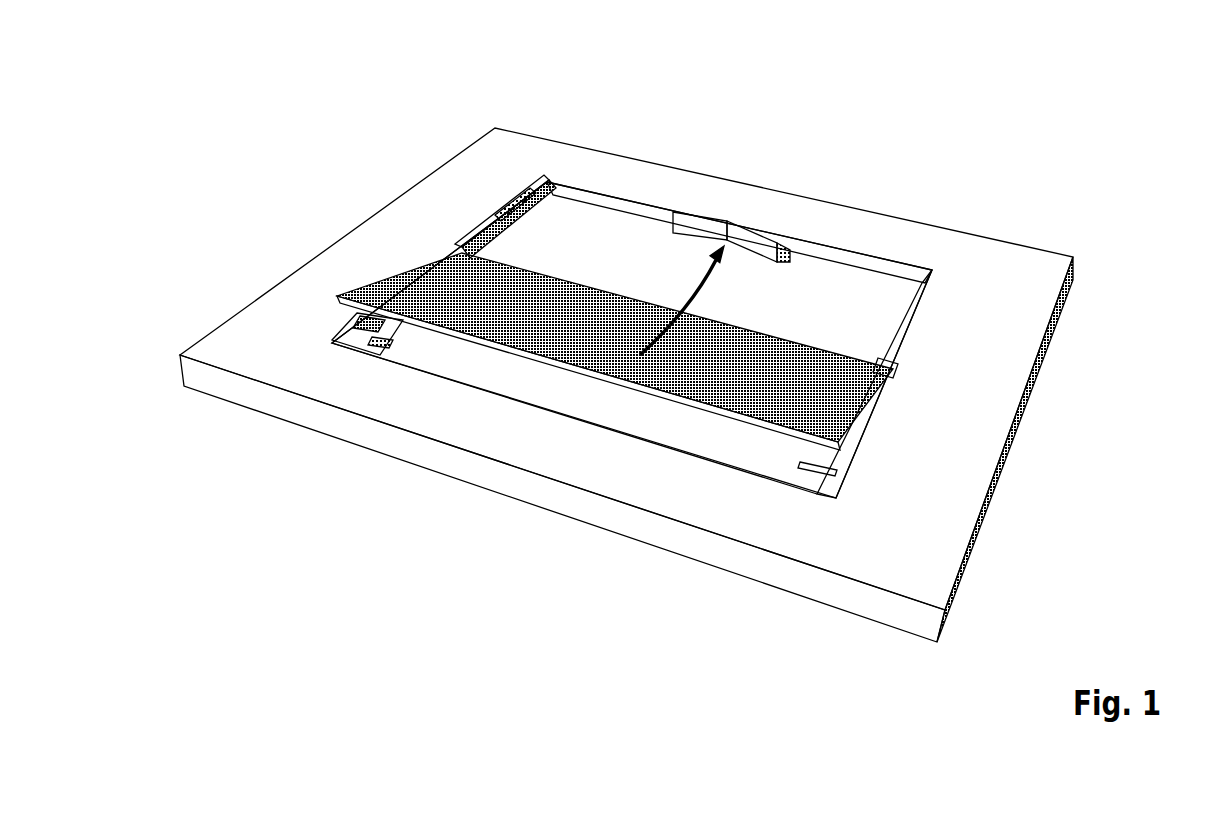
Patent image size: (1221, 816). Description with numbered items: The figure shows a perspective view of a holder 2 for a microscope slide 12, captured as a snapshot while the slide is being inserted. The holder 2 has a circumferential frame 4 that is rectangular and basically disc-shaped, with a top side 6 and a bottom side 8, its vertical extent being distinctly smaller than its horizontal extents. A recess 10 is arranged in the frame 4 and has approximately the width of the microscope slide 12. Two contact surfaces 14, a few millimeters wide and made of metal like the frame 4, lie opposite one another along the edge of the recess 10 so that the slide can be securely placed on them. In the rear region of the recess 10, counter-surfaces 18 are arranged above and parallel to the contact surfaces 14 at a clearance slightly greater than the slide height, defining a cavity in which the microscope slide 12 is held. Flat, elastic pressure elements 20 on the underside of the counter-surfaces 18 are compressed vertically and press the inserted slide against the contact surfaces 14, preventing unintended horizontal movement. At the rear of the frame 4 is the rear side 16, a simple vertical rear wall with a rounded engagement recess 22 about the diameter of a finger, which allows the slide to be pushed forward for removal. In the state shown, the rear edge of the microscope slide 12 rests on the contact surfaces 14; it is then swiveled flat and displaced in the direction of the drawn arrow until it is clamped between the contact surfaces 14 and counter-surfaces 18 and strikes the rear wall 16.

The holder 2 is at (630, 355).
The circumferential frame 4 is at (630, 410).
The top side 6 is at (1012, 268).
The bottom side 8 is at (722, 565).
The recess 10 is at (648, 248).
The microscope slide 12 is at (405, 282).
The contact surfaces 14 is at (375, 327).
The rear side 16 is at (787, 257).
The counter-surfaces 18 is at (457, 253).
The pressure elements 20 is at (507, 220).
The engagement recess 22 is at (733, 223).